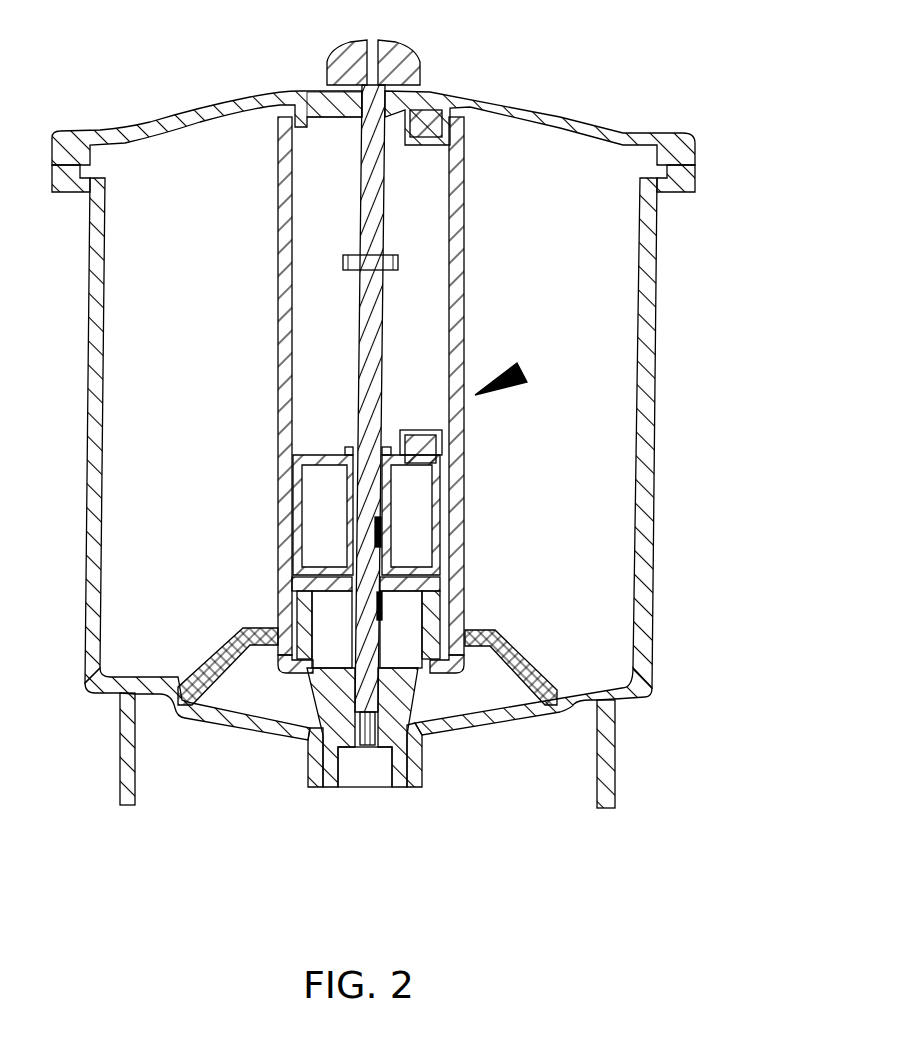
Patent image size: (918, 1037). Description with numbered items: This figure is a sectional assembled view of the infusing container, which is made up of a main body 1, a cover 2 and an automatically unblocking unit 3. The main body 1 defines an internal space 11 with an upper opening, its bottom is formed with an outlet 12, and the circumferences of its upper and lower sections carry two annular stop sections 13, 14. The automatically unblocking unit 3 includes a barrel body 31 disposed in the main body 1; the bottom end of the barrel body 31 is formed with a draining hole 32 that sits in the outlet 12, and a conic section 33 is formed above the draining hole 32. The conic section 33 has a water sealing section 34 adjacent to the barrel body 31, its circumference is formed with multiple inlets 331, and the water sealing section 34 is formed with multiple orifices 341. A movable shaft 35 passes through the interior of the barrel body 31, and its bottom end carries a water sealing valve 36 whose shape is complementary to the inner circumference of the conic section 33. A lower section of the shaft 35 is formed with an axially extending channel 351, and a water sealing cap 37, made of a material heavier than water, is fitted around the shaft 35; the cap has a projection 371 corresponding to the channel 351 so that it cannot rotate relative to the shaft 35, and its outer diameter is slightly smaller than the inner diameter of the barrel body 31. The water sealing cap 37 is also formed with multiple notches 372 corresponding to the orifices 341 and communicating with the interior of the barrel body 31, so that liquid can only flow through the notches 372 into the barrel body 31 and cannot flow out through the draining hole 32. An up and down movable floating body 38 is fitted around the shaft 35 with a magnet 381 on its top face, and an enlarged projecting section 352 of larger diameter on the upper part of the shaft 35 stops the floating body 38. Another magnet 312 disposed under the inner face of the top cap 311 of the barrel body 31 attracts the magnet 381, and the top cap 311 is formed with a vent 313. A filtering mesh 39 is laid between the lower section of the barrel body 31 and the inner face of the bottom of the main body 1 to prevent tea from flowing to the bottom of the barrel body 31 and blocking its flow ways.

The main body 1 is at (653, 513).
The internal space 11 is at (600, 407).
The outlet 12 is at (331, 787).
The annular stop section 13 is at (673, 192).
The annular stop section 14 is at (628, 706).
The cover 2 is at (548, 113).
The automatically unblocking unit 3 is at (527, 373).
The barrel body 31 is at (457, 236).
The top cap 311 is at (427, 92).
The magnet 312 is at (433, 135).
The vent 313 is at (323, 92).
The draining hole 32 is at (363, 765).
The conic section 33 is at (433, 755).
The inlet 331 is at (433, 710).
The water sealing section 34 is at (303, 667).
The orifice 341 is at (437, 686).
The movable shaft 35 is at (370, 360).
The channel 351 is at (380, 665).
The enlarged projecting section 352 is at (343, 261).
The water sealing valve 36 is at (385, 747).
The water sealing cap 37 is at (445, 628).
The projection 371 is at (380, 545).
The notch 372 is at (503, 650).
The floating body 38 is at (323, 460).
The magnet 381 is at (413, 455).
The filtering mesh 39 is at (213, 652).